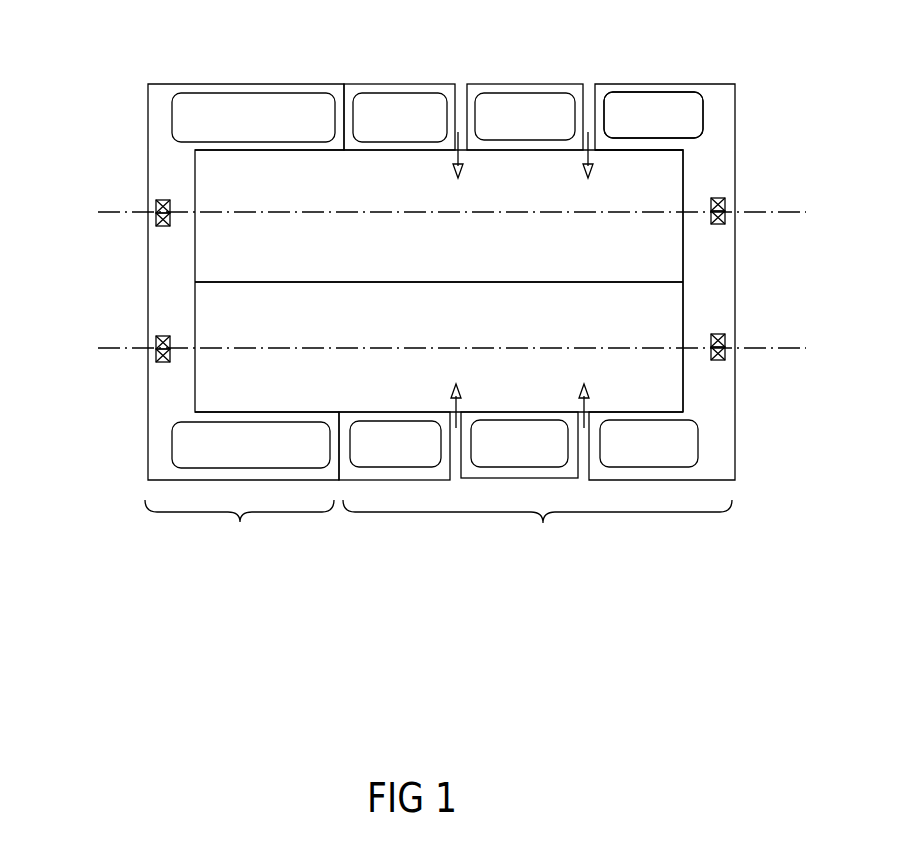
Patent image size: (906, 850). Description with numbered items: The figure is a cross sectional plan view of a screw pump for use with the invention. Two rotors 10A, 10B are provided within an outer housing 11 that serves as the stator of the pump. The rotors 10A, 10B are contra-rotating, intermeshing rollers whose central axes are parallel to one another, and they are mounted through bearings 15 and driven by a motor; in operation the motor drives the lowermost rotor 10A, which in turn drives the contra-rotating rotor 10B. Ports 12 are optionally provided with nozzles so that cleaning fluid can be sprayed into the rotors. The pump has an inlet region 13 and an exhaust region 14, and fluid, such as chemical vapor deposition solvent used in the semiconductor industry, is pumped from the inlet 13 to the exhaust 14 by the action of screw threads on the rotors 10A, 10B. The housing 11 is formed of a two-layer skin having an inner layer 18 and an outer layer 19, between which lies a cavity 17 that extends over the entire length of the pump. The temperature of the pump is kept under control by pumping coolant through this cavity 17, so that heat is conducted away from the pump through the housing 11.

The rotor 10A is at (240, 330).
The rotor 10B is at (242, 192).
The outer housing 11 is at (158, 97).
The port 12 is at (462, 78).
The inlet region 13 is at (239, 533).
The exhaust region 14 is at (537, 533).
The bearing 15 is at (725, 215).
The cavity 17 is at (678, 120).
The inner layer 18 is at (650, 143).
The outer layer 19 is at (648, 92).